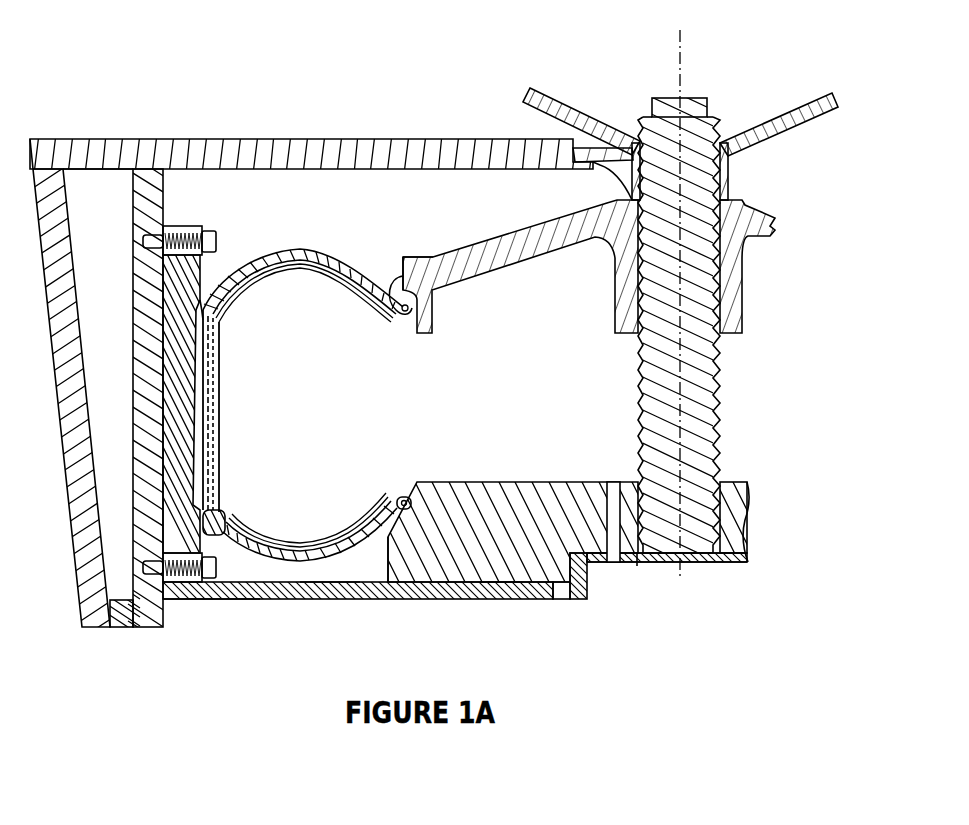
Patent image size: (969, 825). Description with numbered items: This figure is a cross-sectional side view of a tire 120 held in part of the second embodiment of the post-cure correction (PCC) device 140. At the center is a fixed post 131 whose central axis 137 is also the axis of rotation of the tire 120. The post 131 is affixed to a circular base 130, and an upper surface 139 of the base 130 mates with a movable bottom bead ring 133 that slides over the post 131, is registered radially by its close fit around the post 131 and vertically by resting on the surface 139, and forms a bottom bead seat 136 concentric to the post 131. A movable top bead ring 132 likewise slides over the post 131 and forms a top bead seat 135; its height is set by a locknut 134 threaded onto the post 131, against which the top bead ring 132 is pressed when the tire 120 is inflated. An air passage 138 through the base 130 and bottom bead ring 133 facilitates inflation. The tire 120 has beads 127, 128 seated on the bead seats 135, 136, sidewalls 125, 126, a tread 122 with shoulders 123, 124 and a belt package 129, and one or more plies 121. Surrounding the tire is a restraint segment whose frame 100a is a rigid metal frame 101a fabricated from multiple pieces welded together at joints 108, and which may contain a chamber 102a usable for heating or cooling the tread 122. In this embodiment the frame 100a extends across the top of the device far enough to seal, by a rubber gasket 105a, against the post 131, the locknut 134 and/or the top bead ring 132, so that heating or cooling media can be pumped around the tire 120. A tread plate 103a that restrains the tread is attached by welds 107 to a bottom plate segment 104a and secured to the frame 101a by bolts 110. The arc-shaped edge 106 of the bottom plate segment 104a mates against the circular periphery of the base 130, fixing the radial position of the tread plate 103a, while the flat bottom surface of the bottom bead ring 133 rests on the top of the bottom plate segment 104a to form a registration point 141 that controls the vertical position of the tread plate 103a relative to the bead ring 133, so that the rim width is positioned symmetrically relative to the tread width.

The restraint segment frame 100a is at (262, 137).
The frame 101a is at (68, 155).
The chamber 102a is at (112, 193).
The tread plate 103a is at (172, 437).
The bottom plate segment 104a is at (412, 593).
The gasket 105a is at (600, 172).
The arc-shaped edge 106 is at (553, 599).
The welds 107 is at (220, 599).
The joints 108 is at (62, 139).
The bolts 110 is at (218, 240).
The tire 120 is at (330, 377).
The plies 121 is at (292, 269).
The tread 122 is at (190, 382).
The top tire shoulder 123 is at (207, 300).
The bottom tire shoulder 124 is at (225, 524).
The sidewall 125 is at (315, 252).
The sidewall 126 is at (330, 599).
The top bead 127 is at (401, 318).
The bottom bead 128 is at (402, 497).
The belt package 129 is at (210, 350).
The circular base 130 is at (583, 588).
The center post 131 is at (675, 110).
The top bead ring 132 is at (553, 237).
The bottom bead ring 133 is at (490, 482).
The locknut 134 is at (772, 118).
The top bead seat 135 is at (413, 257).
The bottom bead seat 136 is at (410, 515).
The central axis 137 is at (722, 28).
The air passage 138 is at (613, 482).
The upper surface of base 139 is at (637, 566).
The PCC device 140 is at (492, 62).
The registration point 141 is at (500, 582).